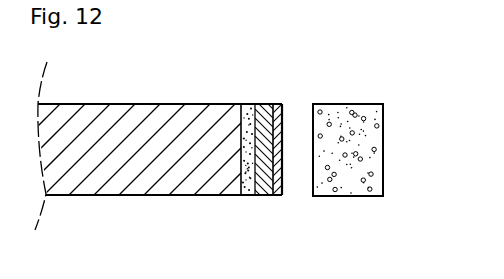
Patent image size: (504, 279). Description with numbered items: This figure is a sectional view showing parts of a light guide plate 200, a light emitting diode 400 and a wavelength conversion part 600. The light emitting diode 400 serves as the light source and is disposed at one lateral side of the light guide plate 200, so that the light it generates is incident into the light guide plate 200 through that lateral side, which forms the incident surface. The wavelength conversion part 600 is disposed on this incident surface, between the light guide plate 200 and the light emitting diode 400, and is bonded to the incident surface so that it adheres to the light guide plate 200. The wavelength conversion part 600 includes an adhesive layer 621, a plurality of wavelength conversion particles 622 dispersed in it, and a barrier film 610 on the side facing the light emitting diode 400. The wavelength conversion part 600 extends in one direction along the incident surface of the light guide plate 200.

The light guide plate 200 is at (186, 196).
The light emitting diode 400 is at (381, 152).
The wavelength conversion part 600 is at (259, 164).
The barrier film 610 is at (272, 169).
The adhesive layer 621 is at (237, 151).
The wavelength conversion particles 622 is at (250, 104).